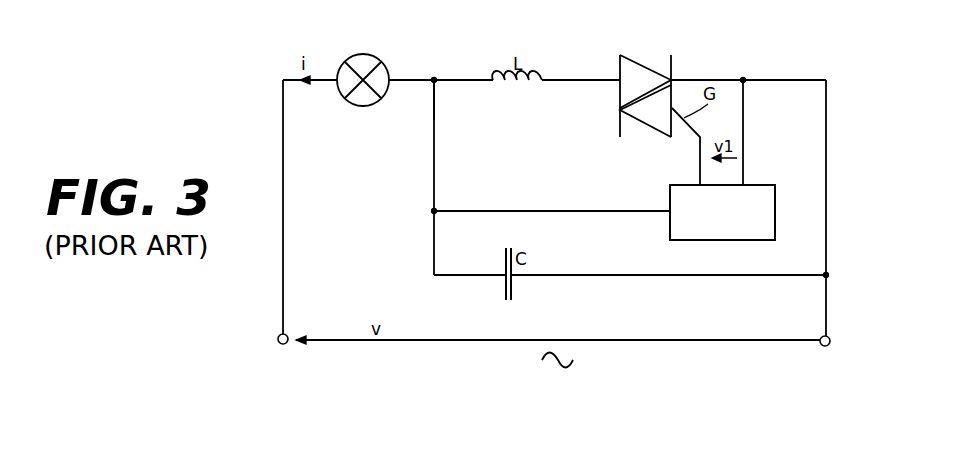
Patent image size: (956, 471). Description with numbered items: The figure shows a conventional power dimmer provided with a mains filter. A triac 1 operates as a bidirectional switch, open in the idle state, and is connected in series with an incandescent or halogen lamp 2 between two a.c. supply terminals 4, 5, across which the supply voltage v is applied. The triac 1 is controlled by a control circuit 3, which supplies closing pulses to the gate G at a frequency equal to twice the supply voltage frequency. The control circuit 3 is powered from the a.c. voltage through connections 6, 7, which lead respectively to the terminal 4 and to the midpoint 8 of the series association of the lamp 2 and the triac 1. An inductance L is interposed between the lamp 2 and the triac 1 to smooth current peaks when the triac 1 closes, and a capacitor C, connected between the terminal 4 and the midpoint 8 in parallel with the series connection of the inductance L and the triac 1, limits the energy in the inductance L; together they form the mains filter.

The triac 1 is at (635, 61).
The lamp 2 is at (364, 52).
The control circuit 3 is at (790, 202).
The a.c. supply terminal 4 is at (831, 338).
The a.c. supply terminal 5 is at (278, 339).
The connection 6 is at (743, 137).
The connection 7 is at (518, 210).
The midpoint 8 is at (435, 76).